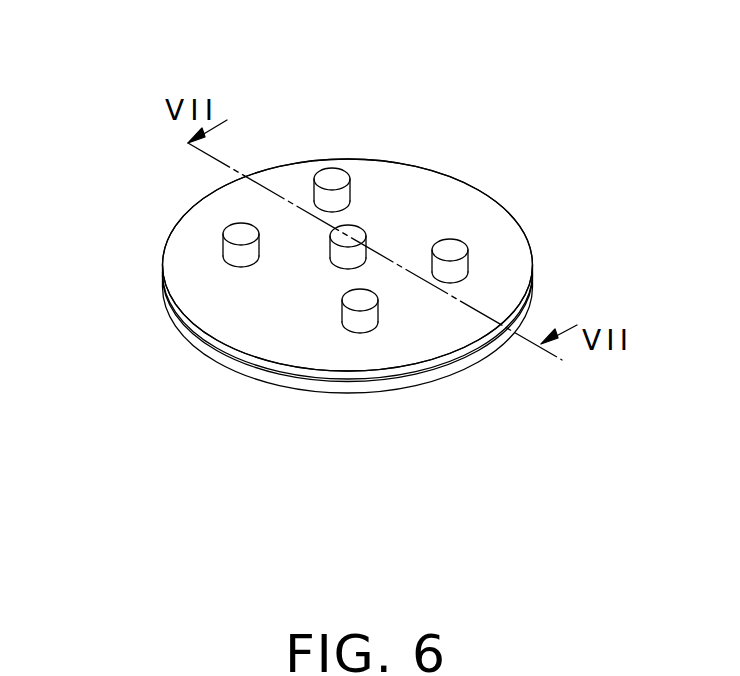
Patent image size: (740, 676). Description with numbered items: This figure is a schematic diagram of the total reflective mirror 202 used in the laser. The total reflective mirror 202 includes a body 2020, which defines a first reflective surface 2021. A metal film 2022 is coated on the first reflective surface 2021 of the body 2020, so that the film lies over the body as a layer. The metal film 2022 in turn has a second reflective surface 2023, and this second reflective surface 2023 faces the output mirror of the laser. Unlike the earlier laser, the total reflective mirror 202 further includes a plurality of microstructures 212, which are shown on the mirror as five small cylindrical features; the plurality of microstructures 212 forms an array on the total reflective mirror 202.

The total reflective mirror 202 is at (185, 58).
The body 2020 is at (478, 358).
The first reflective surface 2021 is at (442, 365).
The metal film 2022 is at (397, 370).
The second reflective surface 2023 is at (210, 215).
The microstructures 212 is at (445, 250).